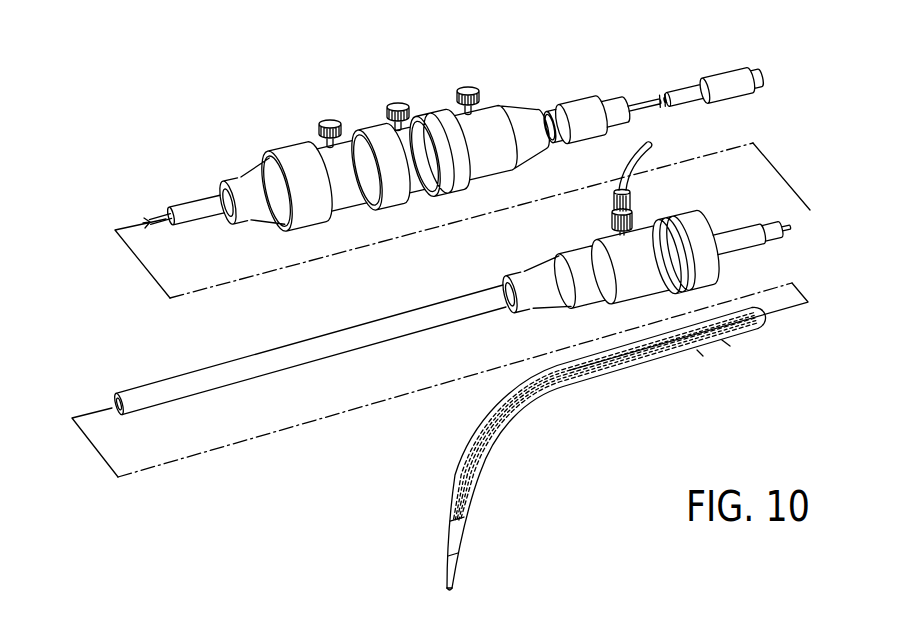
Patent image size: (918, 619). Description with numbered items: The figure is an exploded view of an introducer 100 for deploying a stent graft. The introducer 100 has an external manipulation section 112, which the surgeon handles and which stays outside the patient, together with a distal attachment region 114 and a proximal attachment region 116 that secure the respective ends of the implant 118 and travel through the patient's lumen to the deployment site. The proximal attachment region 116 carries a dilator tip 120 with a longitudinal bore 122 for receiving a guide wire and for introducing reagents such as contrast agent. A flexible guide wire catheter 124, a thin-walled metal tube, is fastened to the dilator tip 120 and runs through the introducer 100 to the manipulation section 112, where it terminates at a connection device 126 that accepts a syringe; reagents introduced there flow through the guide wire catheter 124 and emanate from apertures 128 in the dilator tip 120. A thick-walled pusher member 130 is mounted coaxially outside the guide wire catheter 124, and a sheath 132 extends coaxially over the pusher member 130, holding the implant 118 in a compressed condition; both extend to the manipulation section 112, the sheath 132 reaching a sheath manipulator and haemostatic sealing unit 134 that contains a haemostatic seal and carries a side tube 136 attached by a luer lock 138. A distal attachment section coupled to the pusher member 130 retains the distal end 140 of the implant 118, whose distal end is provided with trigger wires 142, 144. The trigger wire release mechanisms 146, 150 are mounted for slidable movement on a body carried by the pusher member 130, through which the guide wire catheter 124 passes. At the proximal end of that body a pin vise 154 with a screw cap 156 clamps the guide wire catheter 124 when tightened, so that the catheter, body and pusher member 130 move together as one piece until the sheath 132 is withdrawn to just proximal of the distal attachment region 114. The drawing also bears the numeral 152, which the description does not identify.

The introducer 100 is at (224, 160).
The external manipulation section 112 is at (274, 133).
The distal attachment region 114 is at (728, 343).
The proximal attachment region 116 is at (483, 550).
The implant 118 is at (655, 362).
The dilator tip 120 is at (447, 556).
The bore 122 is at (448, 586).
The guide wire catheter 124 is at (163, 207).
The connection device 126 is at (737, 67).
The apertures 128 is at (449, 522).
The pusher member 130 is at (223, 220).
The sheath 132 is at (170, 383).
The sheath manipulator and haemostatic sealing unit 134 is at (708, 203).
The side tube 136 is at (633, 153).
The luer lock 138 is at (610, 203).
The distal end 140 is at (700, 352).
The trigger wires 142 is at (158, 232).
The trigger wires 144 is at (172, 224).
The trigger wire release mechanism 146 is at (345, 205).
The release wire actuation section 150 is at (395, 190).
The locking knob 152 is at (329, 122).
The pin vise 154 is at (572, 102).
The screw cap 156 is at (615, 100).